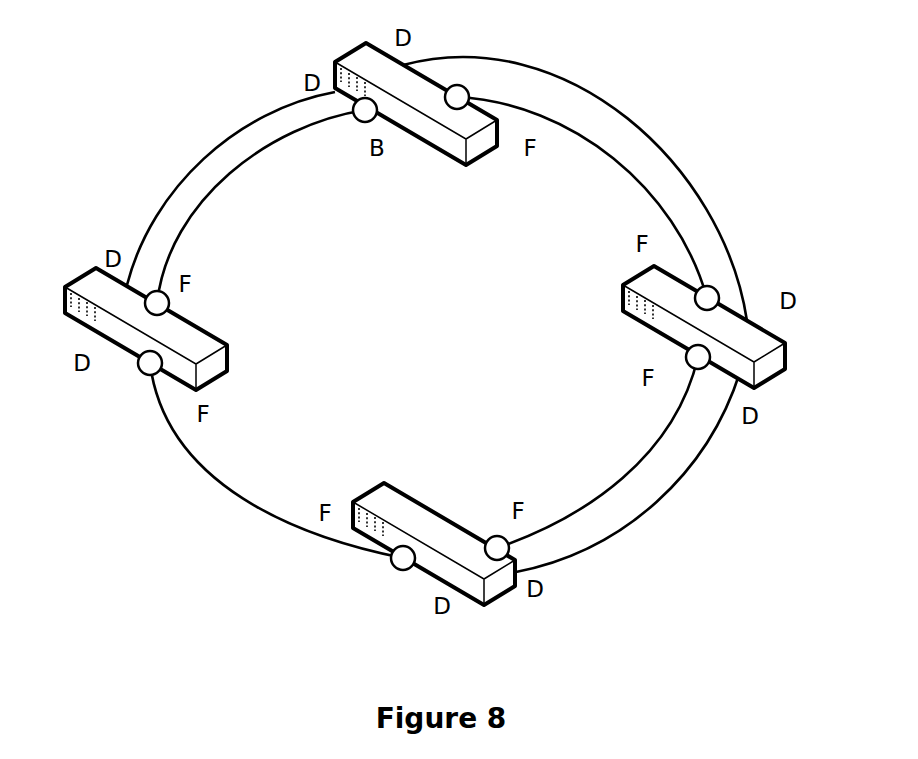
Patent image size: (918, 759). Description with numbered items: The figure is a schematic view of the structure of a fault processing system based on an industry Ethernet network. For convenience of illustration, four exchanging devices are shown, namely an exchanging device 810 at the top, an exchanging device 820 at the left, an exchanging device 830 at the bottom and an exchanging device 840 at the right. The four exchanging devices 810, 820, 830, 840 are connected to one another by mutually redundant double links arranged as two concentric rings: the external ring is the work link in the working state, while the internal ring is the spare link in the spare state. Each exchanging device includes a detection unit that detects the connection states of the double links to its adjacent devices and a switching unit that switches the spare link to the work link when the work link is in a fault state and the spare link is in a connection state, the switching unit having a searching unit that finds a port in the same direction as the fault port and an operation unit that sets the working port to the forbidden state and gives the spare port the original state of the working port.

The exchanging device 810 is at (403, 87).
The exchanging device 820 is at (182, 328).
The exchanging device 830 is at (398, 512).
The exchanging device 840 is at (722, 318).